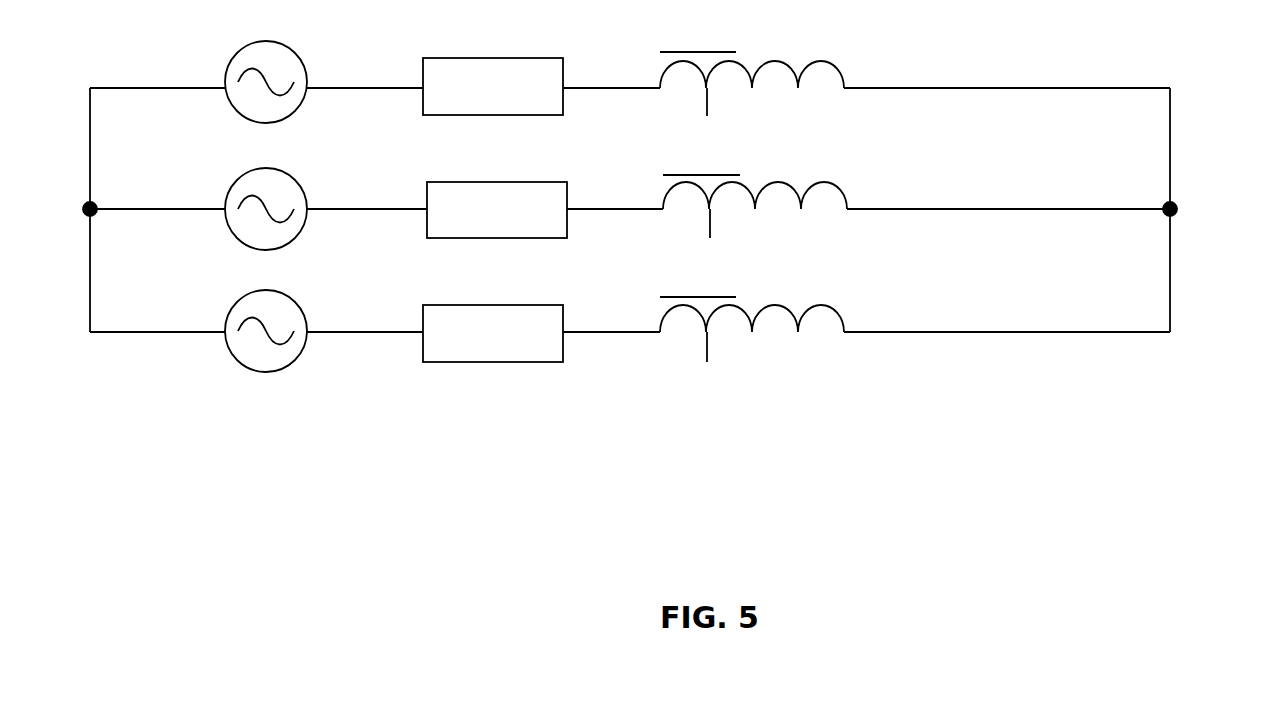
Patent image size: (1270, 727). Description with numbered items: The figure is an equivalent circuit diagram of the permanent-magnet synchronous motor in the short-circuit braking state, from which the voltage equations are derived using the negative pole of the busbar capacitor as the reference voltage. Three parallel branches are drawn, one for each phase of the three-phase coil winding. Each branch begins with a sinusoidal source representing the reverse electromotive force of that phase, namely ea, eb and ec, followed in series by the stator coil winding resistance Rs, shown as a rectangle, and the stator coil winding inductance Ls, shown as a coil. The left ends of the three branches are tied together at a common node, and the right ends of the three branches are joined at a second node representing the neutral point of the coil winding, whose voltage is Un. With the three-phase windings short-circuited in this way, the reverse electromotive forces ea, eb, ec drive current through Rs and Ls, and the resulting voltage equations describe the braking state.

The reverse electromotive force of phase a ea is at (241, 79).
The reverse electromotive force of phase b eb is at (241, 198).
The reverse electromotive force of phase c ec is at (241, 325).
The stator winding resistance Rs is at (495, 181).
The stator winding inductance Ls is at (753, 181).
The neutral point voltage Un is at (1207, 212).